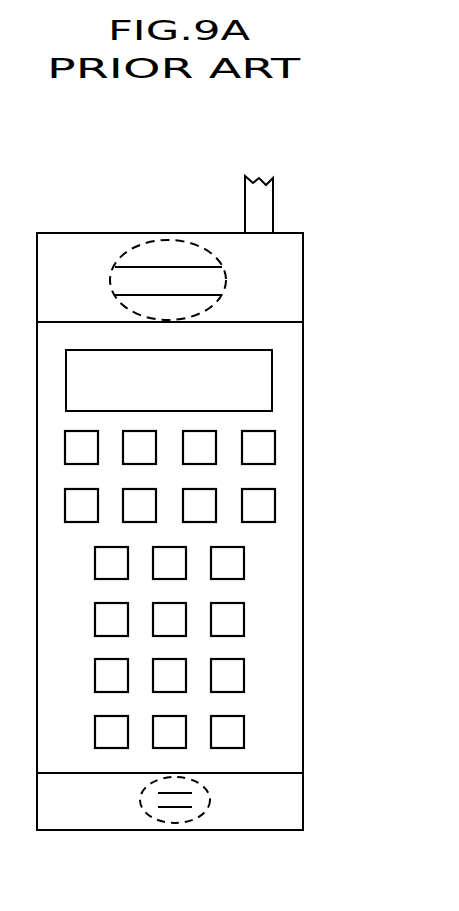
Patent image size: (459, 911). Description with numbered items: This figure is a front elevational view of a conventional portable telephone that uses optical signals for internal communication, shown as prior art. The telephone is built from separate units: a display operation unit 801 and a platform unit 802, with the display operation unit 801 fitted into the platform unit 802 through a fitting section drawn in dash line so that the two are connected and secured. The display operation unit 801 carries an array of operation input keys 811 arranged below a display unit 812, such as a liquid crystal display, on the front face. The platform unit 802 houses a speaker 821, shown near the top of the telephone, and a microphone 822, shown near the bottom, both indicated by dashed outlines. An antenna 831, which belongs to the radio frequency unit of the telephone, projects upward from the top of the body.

The display operation unit 801 is at (303, 363).
The platform unit 802 is at (303, 270).
The operation input key 811 is at (275, 453).
The display unit 812 is at (272, 390).
The speaker 821 is at (142, 242).
The microphone 822 is at (195, 817).
The antenna 831 is at (253, 195).